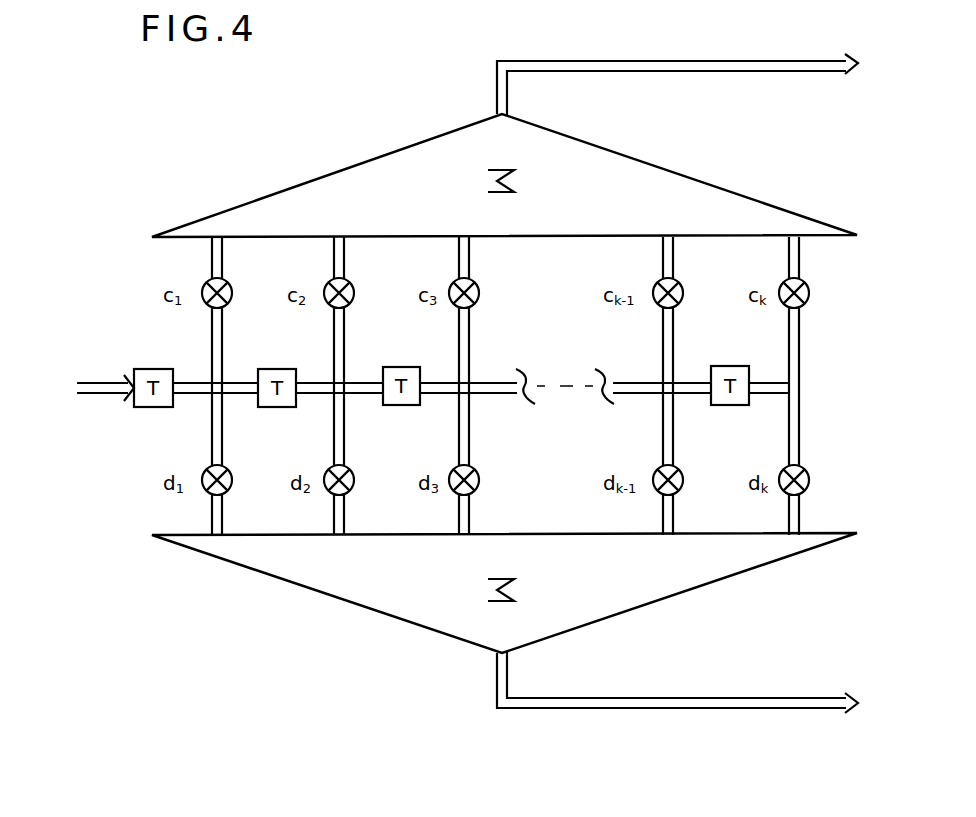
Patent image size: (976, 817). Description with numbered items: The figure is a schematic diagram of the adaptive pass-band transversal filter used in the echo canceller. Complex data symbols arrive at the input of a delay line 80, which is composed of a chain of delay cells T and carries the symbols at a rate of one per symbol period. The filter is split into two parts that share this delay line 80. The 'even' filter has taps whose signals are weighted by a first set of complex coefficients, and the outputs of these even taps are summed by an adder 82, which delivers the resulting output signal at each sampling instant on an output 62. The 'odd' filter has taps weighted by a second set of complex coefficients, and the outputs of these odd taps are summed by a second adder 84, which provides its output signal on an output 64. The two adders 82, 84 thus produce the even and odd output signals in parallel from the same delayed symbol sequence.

The output 62 is at (707, 72).
The output 64 is at (647, 695).
The delay line 80 is at (117, 395).
The adder 82 is at (370, 160).
The adder 84 is at (368, 610).